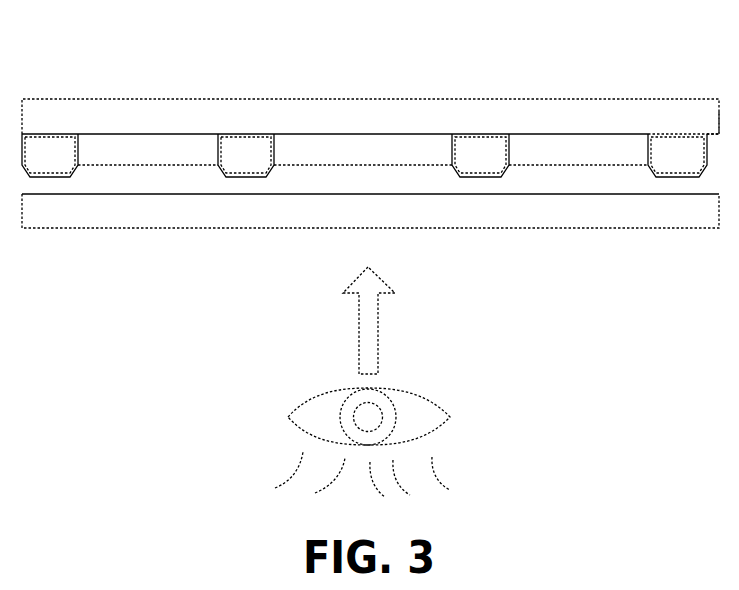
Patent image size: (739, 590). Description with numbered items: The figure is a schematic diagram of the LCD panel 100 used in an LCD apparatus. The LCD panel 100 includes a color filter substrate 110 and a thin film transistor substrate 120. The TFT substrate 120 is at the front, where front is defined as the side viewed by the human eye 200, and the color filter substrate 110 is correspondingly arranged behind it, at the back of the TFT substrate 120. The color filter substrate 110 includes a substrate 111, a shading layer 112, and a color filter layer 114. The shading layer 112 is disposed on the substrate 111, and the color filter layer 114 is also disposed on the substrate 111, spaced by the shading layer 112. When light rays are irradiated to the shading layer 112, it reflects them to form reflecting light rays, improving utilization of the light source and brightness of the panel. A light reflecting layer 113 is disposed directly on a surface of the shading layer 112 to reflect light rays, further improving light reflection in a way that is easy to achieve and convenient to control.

The LCD panel 100 is at (370, 207).
The color filter substrate 110 is at (370, 100).
The substrate 111 is at (660, 121).
The shading layer 112 is at (52, 157).
The light reflecting layer 113 is at (220, 135).
The color filter layer 114 is at (365, 150).
The thin film transistor substrate 120 is at (578, 222).
The human eye 200 is at (472, 422).